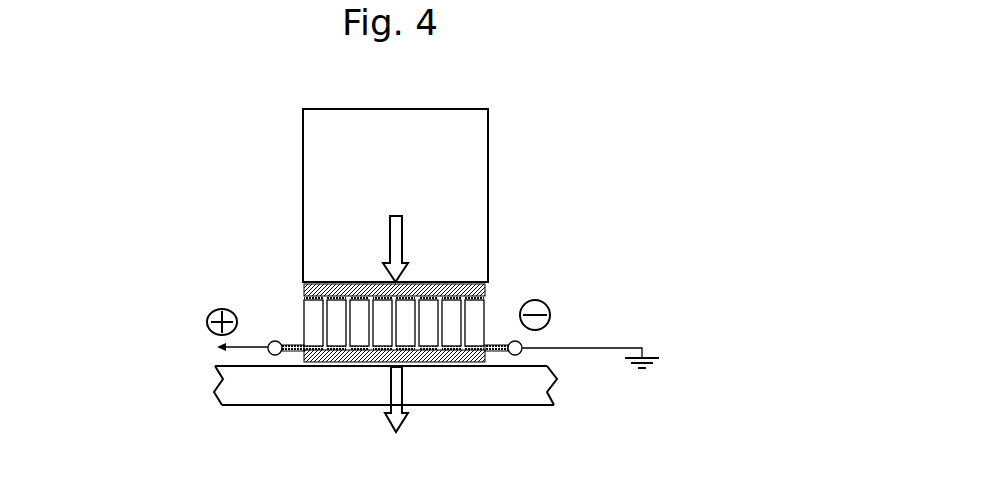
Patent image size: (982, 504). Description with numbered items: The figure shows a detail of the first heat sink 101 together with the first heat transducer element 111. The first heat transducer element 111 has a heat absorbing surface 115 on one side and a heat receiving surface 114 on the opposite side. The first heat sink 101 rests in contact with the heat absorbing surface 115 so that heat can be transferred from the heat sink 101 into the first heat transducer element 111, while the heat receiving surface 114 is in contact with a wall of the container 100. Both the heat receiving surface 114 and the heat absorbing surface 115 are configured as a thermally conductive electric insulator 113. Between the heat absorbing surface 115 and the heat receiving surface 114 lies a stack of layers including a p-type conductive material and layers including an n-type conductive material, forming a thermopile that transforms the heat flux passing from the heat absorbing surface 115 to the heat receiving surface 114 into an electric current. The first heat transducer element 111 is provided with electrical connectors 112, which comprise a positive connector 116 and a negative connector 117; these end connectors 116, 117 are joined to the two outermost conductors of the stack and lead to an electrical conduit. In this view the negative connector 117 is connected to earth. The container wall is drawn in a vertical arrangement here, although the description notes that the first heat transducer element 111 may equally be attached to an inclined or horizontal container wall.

The container 100 is at (524, 384).
The first heat sink 101 is at (492, 141).
The first heat transducer element 111 is at (418, 320).
The electrical connectors 112 is at (293, 343).
The thermally conductive electric insulator 113 is at (442, 282).
The heat receiving surface 114 is at (338, 362).
The heat absorbing surface 115 is at (352, 282).
The positive connector 116 is at (279, 341).
The negative connector 117 is at (521, 347).